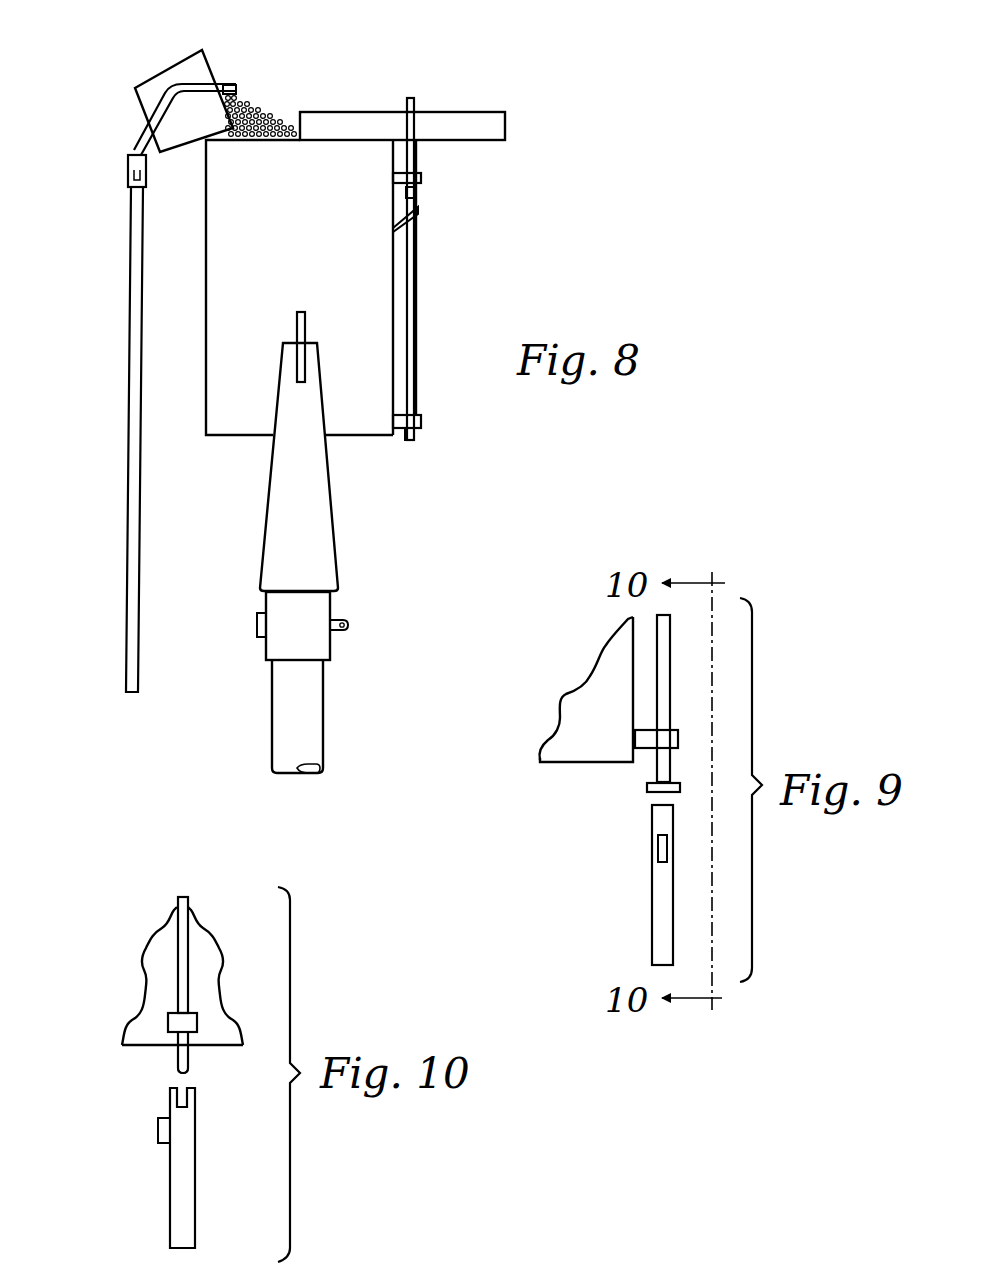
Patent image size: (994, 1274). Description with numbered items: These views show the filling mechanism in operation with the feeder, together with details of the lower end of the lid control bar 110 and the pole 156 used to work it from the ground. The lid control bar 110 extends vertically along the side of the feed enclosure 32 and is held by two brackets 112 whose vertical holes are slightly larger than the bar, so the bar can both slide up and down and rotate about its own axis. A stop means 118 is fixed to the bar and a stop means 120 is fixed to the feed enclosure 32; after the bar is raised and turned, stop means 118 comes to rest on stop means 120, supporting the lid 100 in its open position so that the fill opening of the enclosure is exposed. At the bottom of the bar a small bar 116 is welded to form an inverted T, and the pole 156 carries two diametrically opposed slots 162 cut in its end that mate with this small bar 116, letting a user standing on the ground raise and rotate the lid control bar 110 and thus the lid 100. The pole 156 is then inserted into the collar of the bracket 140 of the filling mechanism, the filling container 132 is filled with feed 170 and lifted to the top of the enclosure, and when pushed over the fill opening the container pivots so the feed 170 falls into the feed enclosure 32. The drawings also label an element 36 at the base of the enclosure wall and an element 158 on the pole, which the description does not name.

In FIG. 8, the feed enclosure 32 is at (204, 276).
In FIG. 9, the feed enclosure 32 is at (582, 678).
In FIG. 10, the feed enclosure 32 is at (138, 966).
In FIG. 9, the base of wall 36 is at (585, 763).
In FIG. 10, the base of wall 36 is at (143, 1047).
In FIG. 8, the lid 100 is at (448, 104).
In FIG. 8, the lid control bar 110 is at (415, 313).
In FIG. 8, the brackets 112 is at (422, 178).
In FIG. 9, the brackets 112 is at (678, 740).
In FIG. 10, the brackets 112 is at (198, 1026).
In FIG. 8, the small bar 116 is at (409, 441).
In FIG. 9, the small bar 116 is at (650, 793).
In FIG. 10, the small bar 116 is at (176, 1071).
In FIG. 8, the stop means 118 is at (416, 193).
In FIG. 8, the stop means 120 is at (420, 210).
In FIG. 8, the filling container 132 is at (164, 70).
In FIG. 8, the bracket 140 is at (131, 148).
In FIG. 8, the pole 156 is at (141, 478).
In FIG. 9, the pole 156 is at (652, 912).
In FIG. 10, the pole 156 is at (170, 1197).
In FIG. 9, the slot 158 is at (658, 850).
In FIG. 10, the slot 158 is at (158, 1135).
In FIG. 10, the slots 162 is at (183, 1085).
In FIG. 8, the feed 170 is at (258, 96).